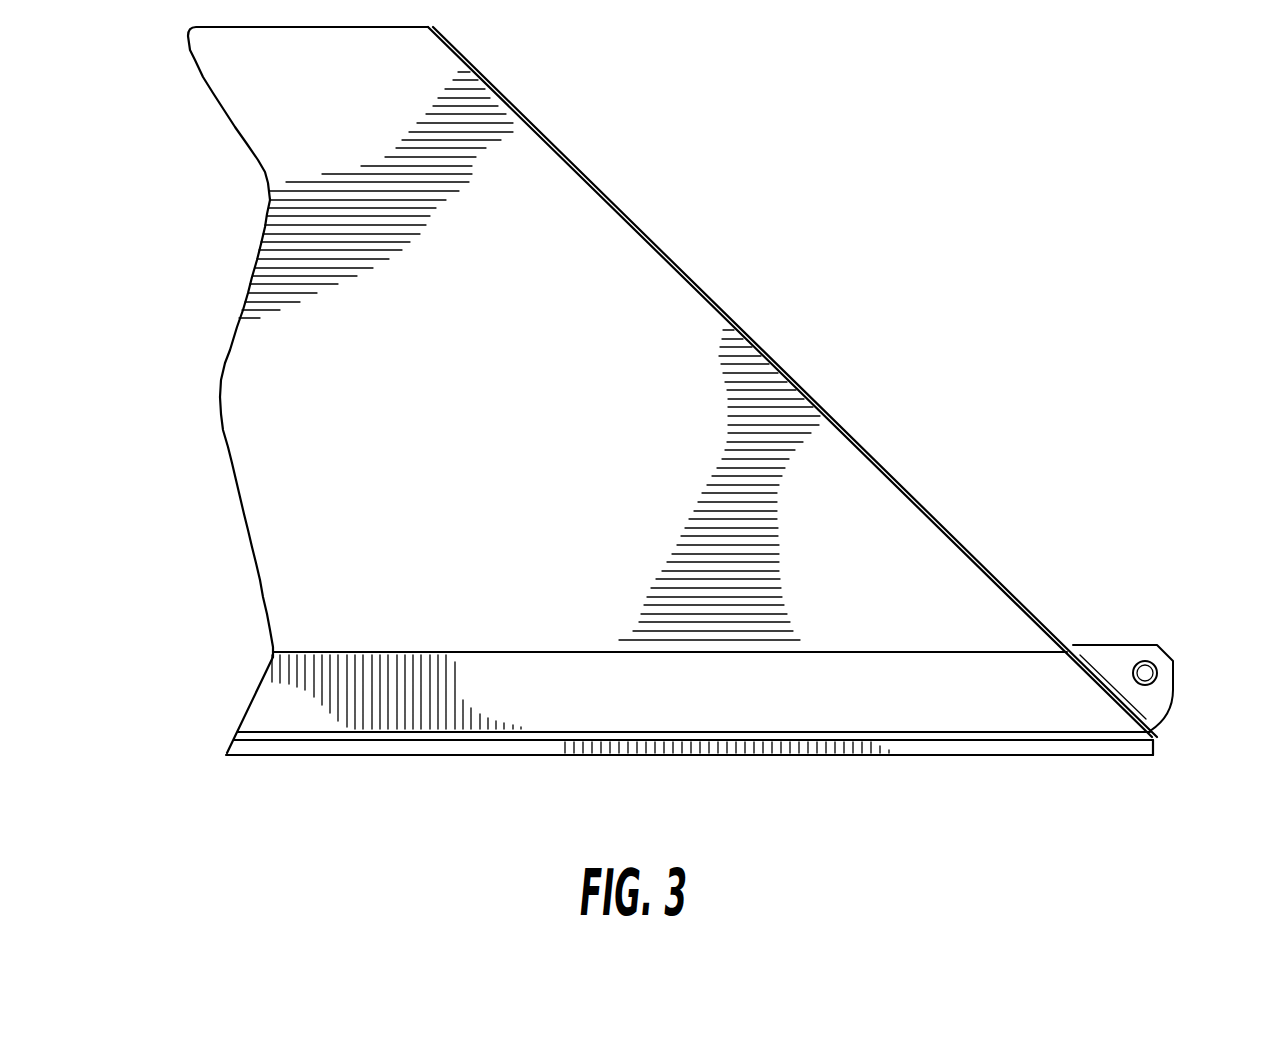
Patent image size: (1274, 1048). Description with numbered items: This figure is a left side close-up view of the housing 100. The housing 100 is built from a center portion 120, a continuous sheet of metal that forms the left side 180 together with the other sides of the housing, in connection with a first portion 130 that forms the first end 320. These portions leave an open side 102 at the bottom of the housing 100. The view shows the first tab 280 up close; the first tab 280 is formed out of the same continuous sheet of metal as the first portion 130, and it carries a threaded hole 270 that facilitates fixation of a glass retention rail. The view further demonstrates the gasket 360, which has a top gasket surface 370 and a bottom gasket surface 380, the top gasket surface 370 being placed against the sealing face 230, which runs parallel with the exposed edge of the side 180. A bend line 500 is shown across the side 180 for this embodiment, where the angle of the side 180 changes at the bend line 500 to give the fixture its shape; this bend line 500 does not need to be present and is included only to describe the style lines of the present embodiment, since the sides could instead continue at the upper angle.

The housing 100 is at (223, 437).
The open side 102 is at (373, 780).
The center portion 120 is at (522, 410).
The first portion 130 is at (685, 276).
The left side 180 is at (490, 630).
The sealing face 230 is at (541, 751).
The threaded hole 270 is at (1134, 641).
The first tab 280 is at (1253, 697).
The first end 320 is at (865, 423).
The gasket 360 is at (218, 735).
The top gasket surface 370 is at (1174, 750).
The bottom gasket surface 380 is at (941, 769).
The bend line 500 is at (962, 637).